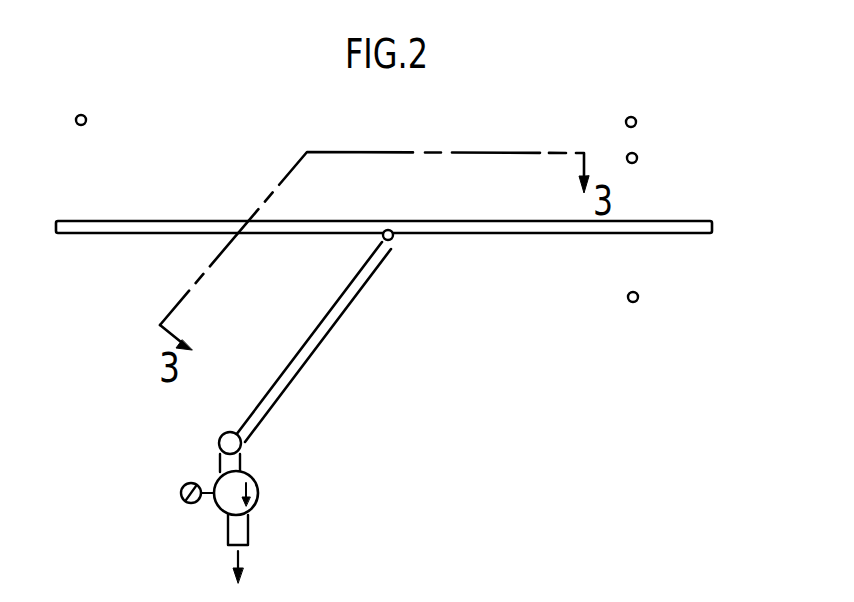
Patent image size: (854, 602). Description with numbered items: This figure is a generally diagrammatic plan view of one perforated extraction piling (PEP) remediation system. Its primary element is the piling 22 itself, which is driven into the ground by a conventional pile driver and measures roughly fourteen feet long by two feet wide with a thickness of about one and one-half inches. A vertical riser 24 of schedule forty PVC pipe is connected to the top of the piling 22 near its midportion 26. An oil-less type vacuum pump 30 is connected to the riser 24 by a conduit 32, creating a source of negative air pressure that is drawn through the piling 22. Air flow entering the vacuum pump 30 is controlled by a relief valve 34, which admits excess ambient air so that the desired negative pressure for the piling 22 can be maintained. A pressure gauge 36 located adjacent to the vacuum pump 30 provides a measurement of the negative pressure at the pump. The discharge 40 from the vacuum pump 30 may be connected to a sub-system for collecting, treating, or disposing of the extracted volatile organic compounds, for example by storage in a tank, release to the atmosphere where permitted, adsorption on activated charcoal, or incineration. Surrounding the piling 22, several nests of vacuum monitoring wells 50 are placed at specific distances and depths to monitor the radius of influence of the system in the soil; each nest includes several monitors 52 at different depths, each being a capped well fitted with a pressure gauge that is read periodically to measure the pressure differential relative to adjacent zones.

The piling 22 is at (460, 221).
The vertical riser 24 is at (391, 240).
The midportion 26 is at (391, 217).
The vacuum pump 30 is at (217, 481).
The conduit 32 is at (310, 350).
The relief valve 34 is at (219, 433).
The pressure gauge 36 is at (181, 492).
The discharge 40 is at (248, 546).
The vacuum monitoring wells 50 is at (89, 107).
The monitor 52 is at (632, 163).